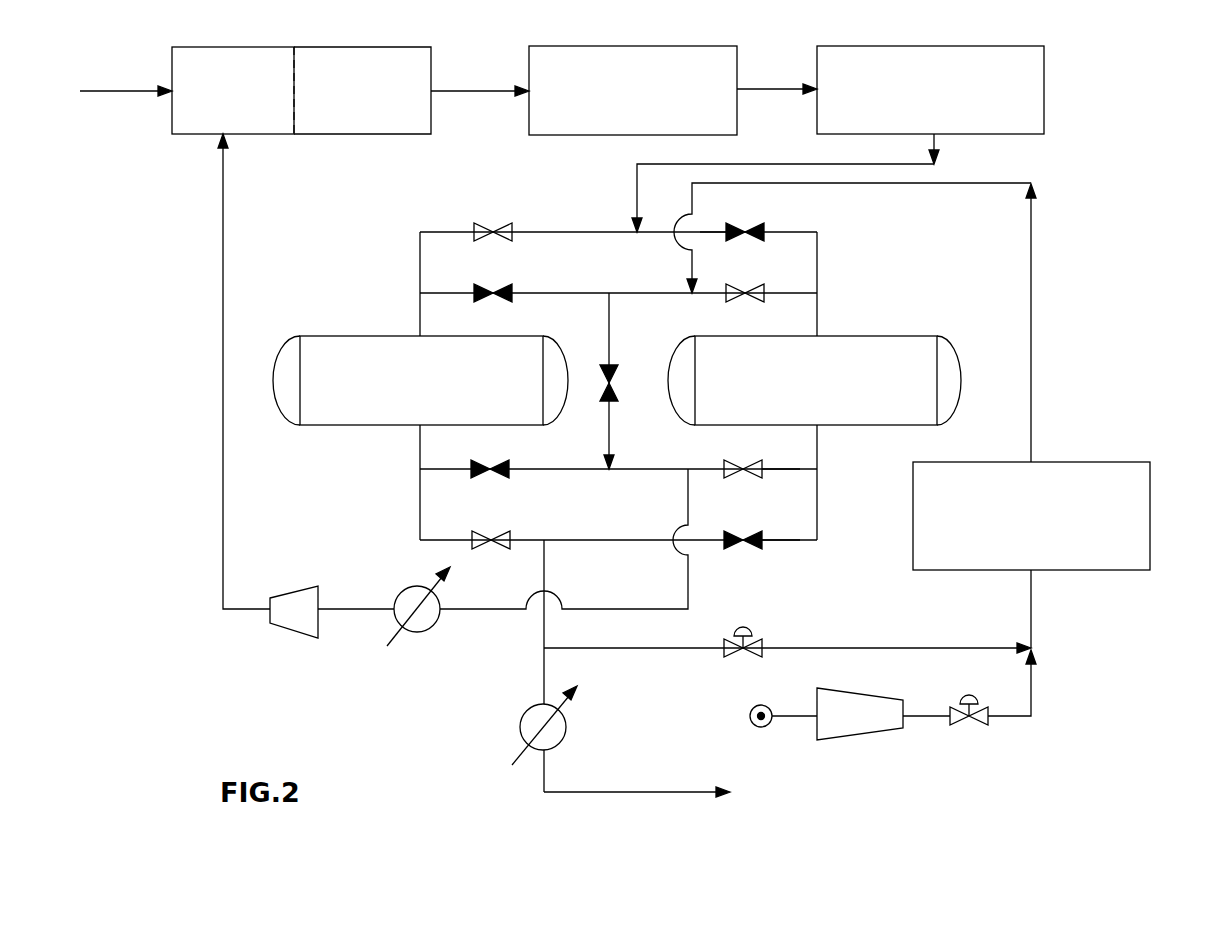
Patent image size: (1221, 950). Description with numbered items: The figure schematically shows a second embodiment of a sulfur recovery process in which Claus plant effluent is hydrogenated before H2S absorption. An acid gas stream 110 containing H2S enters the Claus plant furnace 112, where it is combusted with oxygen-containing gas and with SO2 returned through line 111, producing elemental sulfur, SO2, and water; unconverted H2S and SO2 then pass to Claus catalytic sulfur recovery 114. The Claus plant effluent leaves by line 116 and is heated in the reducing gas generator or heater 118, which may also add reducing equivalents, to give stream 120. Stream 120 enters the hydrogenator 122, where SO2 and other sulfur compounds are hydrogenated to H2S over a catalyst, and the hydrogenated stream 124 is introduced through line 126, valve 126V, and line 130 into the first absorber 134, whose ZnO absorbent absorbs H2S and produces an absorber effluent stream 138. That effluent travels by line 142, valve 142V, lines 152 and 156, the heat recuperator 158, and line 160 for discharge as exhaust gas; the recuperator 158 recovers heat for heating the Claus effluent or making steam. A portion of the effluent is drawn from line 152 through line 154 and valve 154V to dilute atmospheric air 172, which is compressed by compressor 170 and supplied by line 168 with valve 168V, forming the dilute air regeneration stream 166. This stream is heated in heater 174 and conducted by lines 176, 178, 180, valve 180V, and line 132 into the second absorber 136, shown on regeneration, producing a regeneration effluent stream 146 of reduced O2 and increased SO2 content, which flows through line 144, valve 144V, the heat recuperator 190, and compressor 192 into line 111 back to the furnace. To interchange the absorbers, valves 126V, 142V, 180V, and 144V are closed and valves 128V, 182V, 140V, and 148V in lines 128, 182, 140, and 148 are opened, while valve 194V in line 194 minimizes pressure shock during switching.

The acid gas stream 110 is at (117, 93).
The line 111 is at (222, 366).
The Claus plant furnace 112 is at (247, 136).
The Claus catalytic sulfur recovery 114 is at (355, 136).
The line 116 is at (458, 87).
The reducing gas generator or heater 118 is at (570, 137).
The stream 120 is at (750, 86).
The hydrogenator 122 is at (1046, 110).
The hydrogenated stream 124 is at (753, 164).
The line 126 is at (553, 230).
The valve 126V is at (488, 226).
The line 128 is at (700, 236).
The valve 128V is at (752, 226).
The line 130 is at (419, 272).
The line 132 is at (820, 274).
The first absorber 134 is at (333, 335).
The second absorber 136 is at (876, 335).
The absorber effluent stream 138 is at (419, 438).
The line 140 is at (444, 467).
The valve 140V is at (503, 466).
The line 142 is at (431, 538).
The valve 142V is at (506, 536).
The line 144 is at (798, 473).
The valve 144V is at (735, 466).
The regeneration effluent stream 146 is at (818, 438).
The line 148 is at (800, 543).
The valve 148V is at (731, 546).
The line 152 is at (543, 624).
The line 154 is at (904, 646).
The valve 154V is at (760, 646).
The line 156 is at (543, 668).
The heat recuperator 158 is at (520, 722).
The line 160 is at (586, 790).
The dilute air regeneration stream 166 is at (1033, 604).
The line 168 is at (1033, 690).
The valve 168V is at (958, 710).
The compressor 170 is at (869, 733).
The atmospheric air 172 is at (781, 712).
The heater 174 is at (1151, 521).
The line 176 is at (1033, 375).
The line 178 is at (980, 183).
The line 180 is at (705, 296).
The valve 180V is at (750, 298).
The line 182 is at (556, 291).
The valve 182V is at (493, 290).
The heat recuperator 190 is at (412, 586).
The compressor 192 is at (285, 624).
The line 194 is at (610, 420).
The valve 194V is at (618, 374).